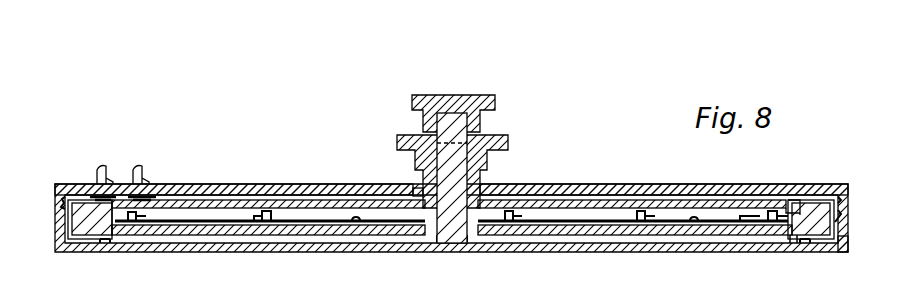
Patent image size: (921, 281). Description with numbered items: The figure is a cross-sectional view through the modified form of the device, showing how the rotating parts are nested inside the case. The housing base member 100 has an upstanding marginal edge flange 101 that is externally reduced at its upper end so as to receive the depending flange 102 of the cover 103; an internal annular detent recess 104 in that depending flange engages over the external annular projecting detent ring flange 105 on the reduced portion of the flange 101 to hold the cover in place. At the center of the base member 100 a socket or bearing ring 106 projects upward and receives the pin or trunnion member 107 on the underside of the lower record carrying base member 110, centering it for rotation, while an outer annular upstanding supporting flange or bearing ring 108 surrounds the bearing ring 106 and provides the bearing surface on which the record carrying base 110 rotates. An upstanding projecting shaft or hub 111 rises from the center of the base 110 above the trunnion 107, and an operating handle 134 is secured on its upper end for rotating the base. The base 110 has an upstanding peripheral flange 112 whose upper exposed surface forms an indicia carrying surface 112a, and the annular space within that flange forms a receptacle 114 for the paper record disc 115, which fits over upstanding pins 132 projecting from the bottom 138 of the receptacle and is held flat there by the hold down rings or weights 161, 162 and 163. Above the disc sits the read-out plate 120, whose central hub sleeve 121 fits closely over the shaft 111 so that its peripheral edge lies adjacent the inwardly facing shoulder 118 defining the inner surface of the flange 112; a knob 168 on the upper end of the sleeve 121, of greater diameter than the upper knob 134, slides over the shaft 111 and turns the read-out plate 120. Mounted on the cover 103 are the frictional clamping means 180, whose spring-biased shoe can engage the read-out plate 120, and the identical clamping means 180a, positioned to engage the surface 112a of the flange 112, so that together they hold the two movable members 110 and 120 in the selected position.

The housing base member 100 is at (633, 243).
The upstanding marginal edge flange 101 is at (841, 246).
The depending flange 102 is at (841, 200).
The cover 103 is at (668, 200).
The internal annular detent recess 104 is at (839, 216).
The external annular projecting detent ring flange 105 is at (61, 203).
The socket or bearing ring 106 is at (463, 241).
The pin or trunnion member 107 is at (444, 241).
The outer annular upstanding supporting flange or bearing ring 108 is at (103, 240).
The record carrying base member 110 is at (592, 228).
The upstanding projecting shaft or hub 111 is at (460, 188).
The upstanding peripheral flange 112 is at (816, 210).
The indicia carrying surface 112a is at (800, 205).
The receptacle 114 is at (756, 219).
The record disc 115 is at (713, 219).
The inwardly facing shoulder 118 is at (793, 241).
The read-out plate 120 is at (205, 204).
The central hub sleeve 121 is at (418, 187).
The upstanding pins or bosses 132 is at (774, 212).
The operating handle 134 is at (463, 67).
The bottom of the receptacle 138 is at (693, 222).
The hold down ring 161 is at (140, 215).
The hold down ring 162 is at (270, 213).
The hold down ring 163 is at (512, 215).
The knob 168 is at (500, 137).
The frictional clamping means 180 is at (143, 165).
The clamping means 180a is at (112, 159).